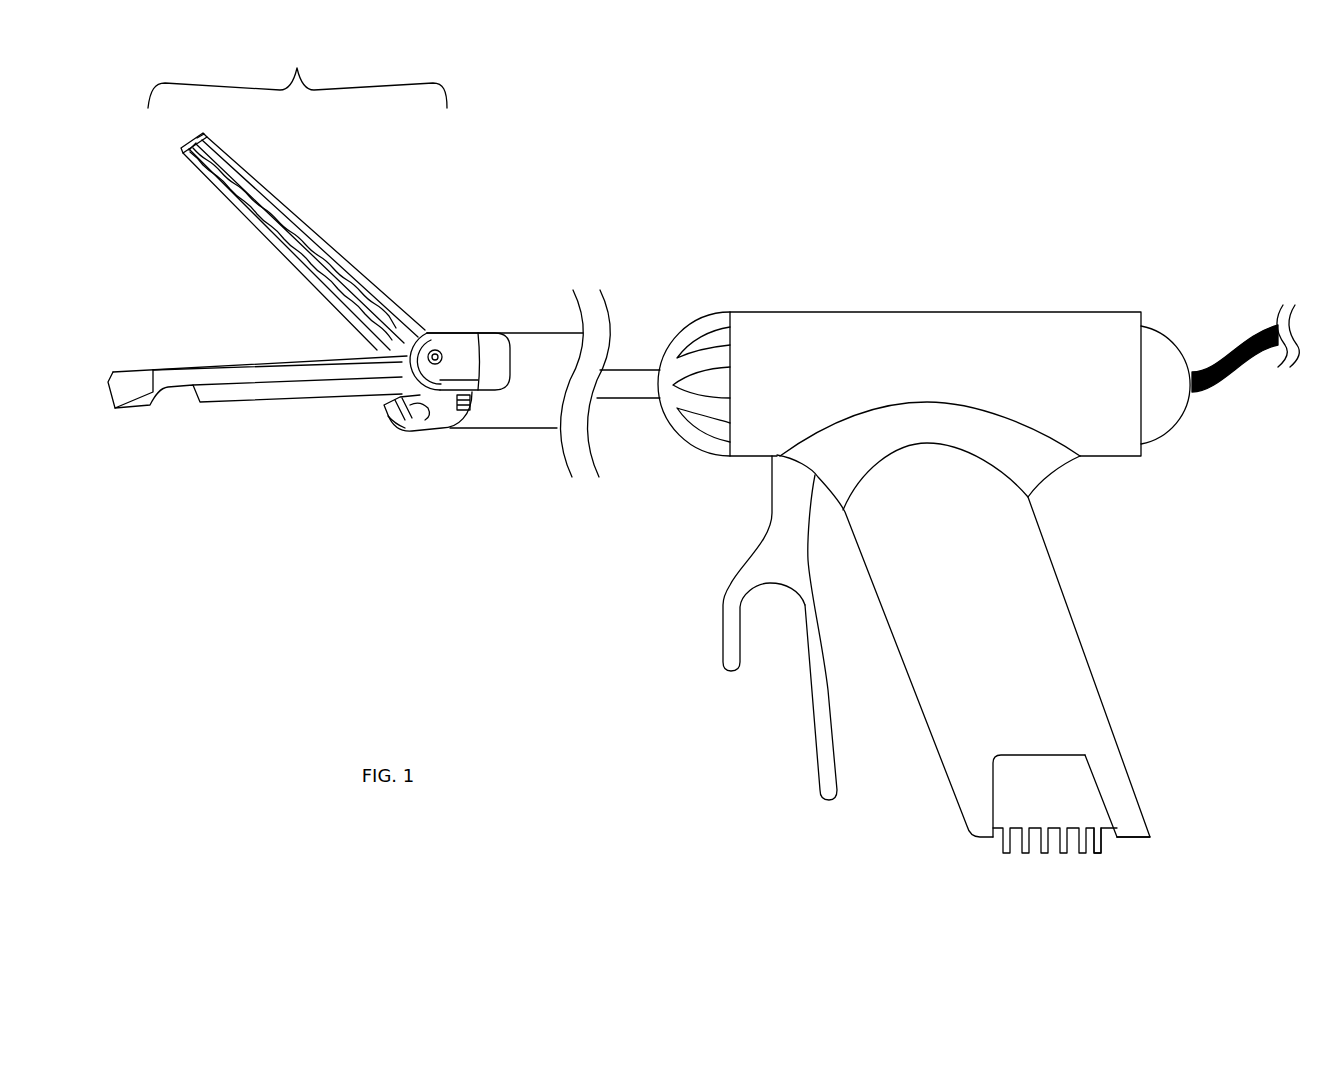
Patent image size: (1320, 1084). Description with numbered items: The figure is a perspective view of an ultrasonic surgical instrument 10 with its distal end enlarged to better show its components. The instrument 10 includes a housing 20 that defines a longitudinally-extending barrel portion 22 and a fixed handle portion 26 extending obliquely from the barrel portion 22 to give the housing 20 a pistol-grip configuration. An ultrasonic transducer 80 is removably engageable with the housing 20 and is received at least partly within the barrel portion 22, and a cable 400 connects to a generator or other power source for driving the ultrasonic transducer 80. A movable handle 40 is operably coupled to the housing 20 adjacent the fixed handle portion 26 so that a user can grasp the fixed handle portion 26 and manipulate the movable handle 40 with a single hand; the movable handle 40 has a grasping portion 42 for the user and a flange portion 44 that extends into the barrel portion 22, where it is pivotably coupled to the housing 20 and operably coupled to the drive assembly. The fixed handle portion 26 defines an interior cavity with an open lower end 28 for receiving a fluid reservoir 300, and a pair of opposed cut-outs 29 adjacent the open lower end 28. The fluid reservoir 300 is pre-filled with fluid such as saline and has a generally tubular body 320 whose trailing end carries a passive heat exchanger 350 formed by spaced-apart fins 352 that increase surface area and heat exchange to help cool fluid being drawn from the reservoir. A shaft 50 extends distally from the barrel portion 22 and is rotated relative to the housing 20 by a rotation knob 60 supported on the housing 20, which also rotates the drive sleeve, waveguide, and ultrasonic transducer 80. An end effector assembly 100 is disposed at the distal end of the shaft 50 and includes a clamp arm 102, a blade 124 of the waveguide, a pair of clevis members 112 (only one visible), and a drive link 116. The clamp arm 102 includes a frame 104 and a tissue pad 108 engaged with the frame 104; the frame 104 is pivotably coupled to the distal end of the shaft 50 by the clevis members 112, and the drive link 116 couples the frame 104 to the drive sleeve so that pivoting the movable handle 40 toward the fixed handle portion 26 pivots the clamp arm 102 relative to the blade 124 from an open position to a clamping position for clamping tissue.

The ultrasonic surgical instrument 10 is at (771, 137).
The housing 20 is at (941, 258).
The barrel portion 22 is at (1073, 412).
The fixed handle portion 26 is at (1035, 652).
The open lower end 28 is at (1148, 833).
The cut-outs 29 is at (1058, 752).
The movable handle 40 is at (758, 775).
The grasping portion 42 is at (815, 703).
The flange portion 44 is at (776, 478).
The shaft 50 is at (638, 378).
The rotation knob 60 is at (702, 327).
The ultrasonic transducer 80 is at (1158, 352).
The end effector assembly 100 is at (312, 280).
The clamp arm 102 is at (352, 226).
The frame 104 is at (279, 193).
The tissue pad 108 is at (262, 225).
The clevis members 112 is at (452, 346).
The drive link 116 is at (450, 418).
The blade 124 is at (250, 385).
The fluid reservoir 300 is at (1057, 880).
The tubular body 320 is at (1062, 773).
The passive heat exchanger 350 is at (1030, 852).
The fins 352 is at (1083, 855).
The cable 400 is at (1240, 358).